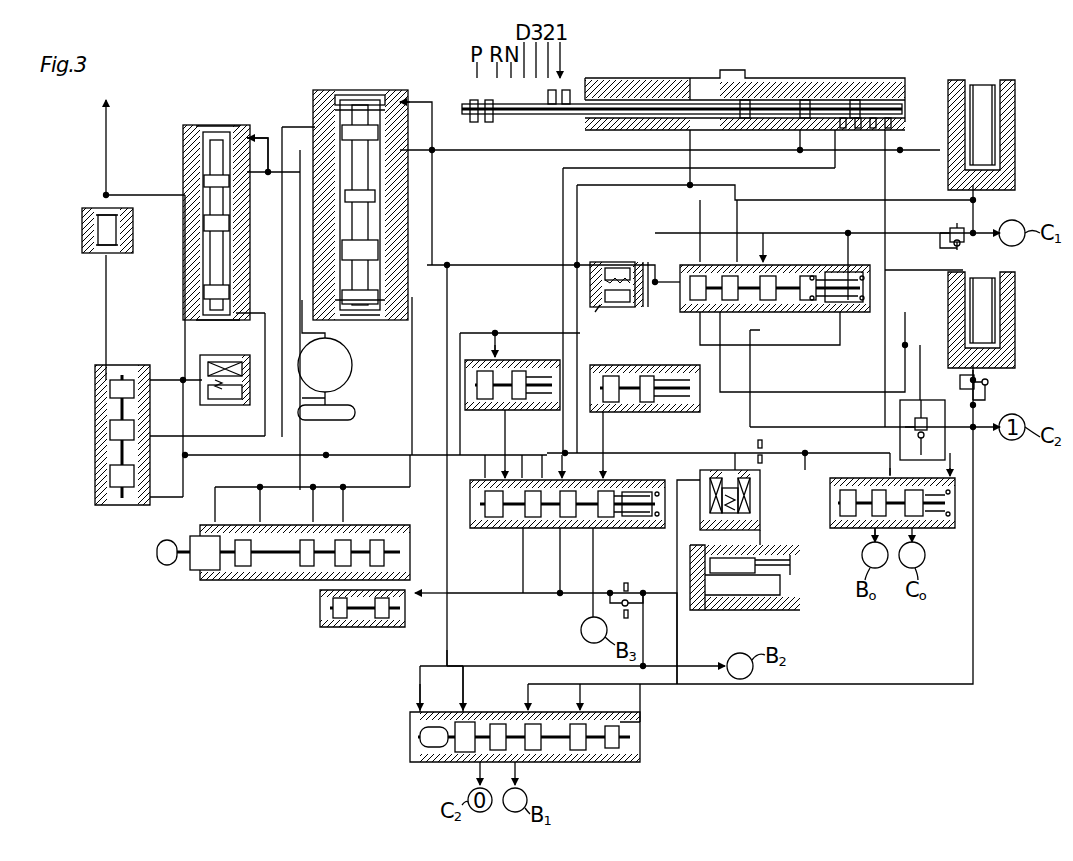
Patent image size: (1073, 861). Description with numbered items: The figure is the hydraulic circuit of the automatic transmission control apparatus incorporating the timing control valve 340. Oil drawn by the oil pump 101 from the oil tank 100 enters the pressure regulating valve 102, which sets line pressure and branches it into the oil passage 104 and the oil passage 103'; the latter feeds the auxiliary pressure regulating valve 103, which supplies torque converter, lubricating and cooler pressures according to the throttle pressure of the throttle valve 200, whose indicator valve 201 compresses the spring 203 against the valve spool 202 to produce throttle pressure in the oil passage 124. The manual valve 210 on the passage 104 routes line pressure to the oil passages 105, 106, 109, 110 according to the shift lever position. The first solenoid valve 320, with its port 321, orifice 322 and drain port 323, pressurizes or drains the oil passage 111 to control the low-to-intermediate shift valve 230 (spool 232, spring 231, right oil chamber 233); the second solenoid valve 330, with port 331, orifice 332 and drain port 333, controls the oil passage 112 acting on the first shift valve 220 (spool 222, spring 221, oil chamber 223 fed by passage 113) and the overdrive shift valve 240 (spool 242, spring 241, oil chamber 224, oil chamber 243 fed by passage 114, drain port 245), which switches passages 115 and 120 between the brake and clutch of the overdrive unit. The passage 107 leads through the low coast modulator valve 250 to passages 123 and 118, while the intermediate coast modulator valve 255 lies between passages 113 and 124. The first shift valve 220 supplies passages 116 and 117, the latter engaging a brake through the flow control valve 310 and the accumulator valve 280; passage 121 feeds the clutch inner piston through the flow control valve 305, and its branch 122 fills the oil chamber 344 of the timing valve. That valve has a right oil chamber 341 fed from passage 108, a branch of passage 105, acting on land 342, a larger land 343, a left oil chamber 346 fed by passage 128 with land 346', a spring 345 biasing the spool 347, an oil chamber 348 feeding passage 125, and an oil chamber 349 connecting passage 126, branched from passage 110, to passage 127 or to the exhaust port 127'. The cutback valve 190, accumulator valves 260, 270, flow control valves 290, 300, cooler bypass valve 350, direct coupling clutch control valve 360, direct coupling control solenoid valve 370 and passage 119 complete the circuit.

The oil tank 100 is at (310, 418).
The oil pump 101 is at (347, 368).
The pressure regulating valve 102 is at (385, 170).
The auxiliary pressure regulating valve 103 is at (216, 206).
The oil passage 103' is at (272, 125).
The oil passage 104 is at (392, 148).
The oil passage 105 is at (755, 168).
The oil passage 106 is at (788, 209).
The oil passage 107 is at (780, 345).
The oil passage 108 is at (677, 626).
The oil passage 109 is at (887, 150).
The oil passage 110 is at (690, 150).
The oil passage 111 is at (662, 282).
The oil passage 112 is at (680, 462).
The oil passage 113 is at (458, 440).
The oil passage 114 is at (800, 392).
The oil passage 115 is at (870, 545).
The oil passage 116 is at (523, 565).
The oil passage 117 is at (558, 545).
The oil passage 118 is at (593, 545).
The oil passage 119 is at (903, 200).
The oil passage 120 is at (912, 530).
The oil passage 121 is at (780, 430).
The oil passage 122 is at (972, 590).
The oil passage 123 is at (616, 445).
The oil passage 124 is at (510, 448).
The oil passage 125 is at (528, 785).
The oil passage 126 is at (450, 290).
The oil passage 127 is at (449, 782).
The exhaust port 127' is at (555, 693).
The oil passage 128 is at (535, 665).
The cutback valve 190 is at (325, 620).
The throttle valve 200 is at (195, 583).
The indicator valve 201 is at (192, 545).
The valve spool 202 is at (275, 578).
The spring 203 is at (245, 582).
The manual valve 210 is at (898, 92).
The 1-2 shift valve 220 is at (470, 518).
The spring 221 is at (620, 490).
The spool 222 is at (592, 522).
The oil chamber 223 is at (470, 500).
The oil chamber 224 is at (862, 528).
The 2-3 shift valve 230 is at (710, 308).
The spring 231 is at (838, 280).
The spool 232 is at (820, 276).
The oil chamber 233 is at (850, 303).
The 3-4 shift valve 240 is at (960, 505).
The spring 241 is at (950, 478).
The spool 242 is at (905, 478).
The oil chamber 243 is at (958, 498).
The drain port 245 is at (985, 460).
The low coast modulator valve 250 is at (655, 364).
The intermediate coast modulator valve 255 is at (512, 408).
The accumulator valve 260 is at (1003, 112).
The accumulator valve 270 is at (1010, 312).
The accumulator valve 280 is at (780, 600).
The flow control valve 290 is at (968, 258).
The flow control valve 300 is at (995, 382).
The flow control valve 305 is at (922, 427).
The flow control valve 310 is at (628, 593).
The first solenoid valve 320 is at (610, 268).
The port 321 is at (633, 250).
The orifice 322 is at (650, 258).
The drain port 323 is at (600, 306).
The second solenoid valve 330 is at (748, 530).
The port 331 is at (748, 480).
The orifice 332 is at (762, 455).
The drain port 333 is at (718, 508).
The timing control valve 340 is at (410, 745).
The oil chamber 341 is at (630, 745).
The land 342 is at (630, 730).
The land 343 is at (610, 760).
The oil chamber 344 is at (588, 716).
The spring 345 is at (415, 770).
The oil chamber 346 is at (440, 693).
The land 346' is at (487, 689).
The spool 347 is at (490, 705).
The oil chamber 348 is at (548, 760).
The oil chamber 349 is at (462, 752).
The cooler bypass valve 350 is at (98, 225).
The direct coupling clutch control valve 360 is at (110, 500).
The direct coupling control solenoid valve 370 is at (225, 405).